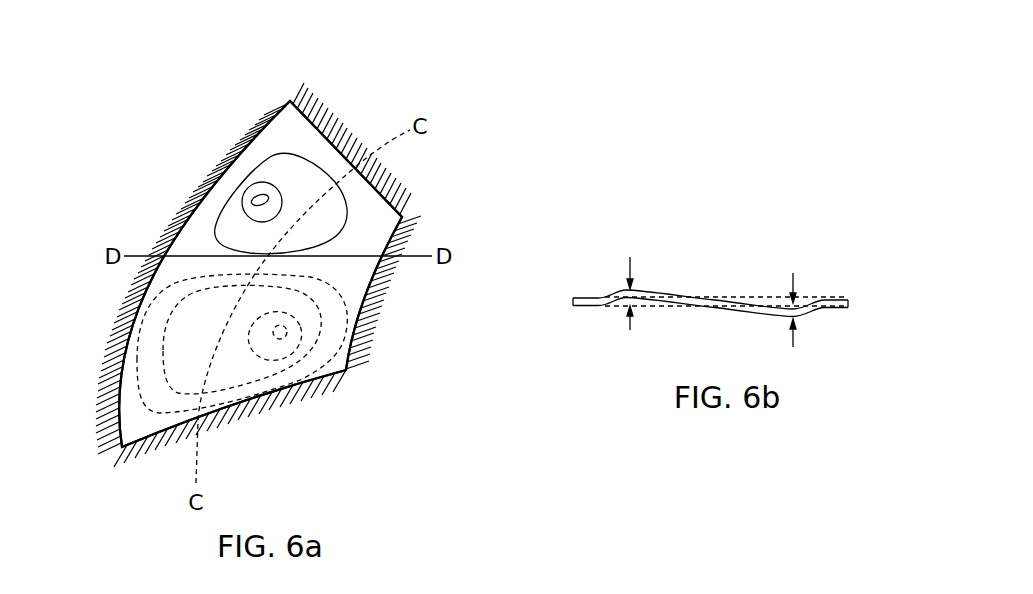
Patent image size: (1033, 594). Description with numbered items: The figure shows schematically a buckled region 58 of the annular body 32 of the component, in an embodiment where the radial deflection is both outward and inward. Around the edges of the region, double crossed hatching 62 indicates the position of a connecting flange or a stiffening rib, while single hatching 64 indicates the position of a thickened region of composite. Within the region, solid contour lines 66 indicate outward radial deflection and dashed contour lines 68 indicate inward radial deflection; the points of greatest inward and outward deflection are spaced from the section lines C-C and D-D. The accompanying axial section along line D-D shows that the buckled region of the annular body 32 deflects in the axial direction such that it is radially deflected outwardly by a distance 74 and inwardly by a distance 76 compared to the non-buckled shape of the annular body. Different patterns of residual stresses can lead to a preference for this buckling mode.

In FIG. 6a, the buckled region 58 is at (147, 135).
In FIG. 6a, the annular body 32 is at (125, 402).
In FIG. 6b, the annular body 32 is at (675, 294).
In FIG. 6a, the double crossed hatching 62 is at (258, 130).
In FIG. 6b, the double crossed hatching 62 is at (775, 264).
In FIG. 6a, the single hatching 64 is at (393, 197).
In FIG. 6a, the solid contour lines 66 is at (214, 228).
In FIG. 6a, the dashed contour lines 68 is at (167, 328).
In FIG. 6b, the distance 74 is at (620, 290).
In FIG. 6b, the distance 76 is at (808, 316).